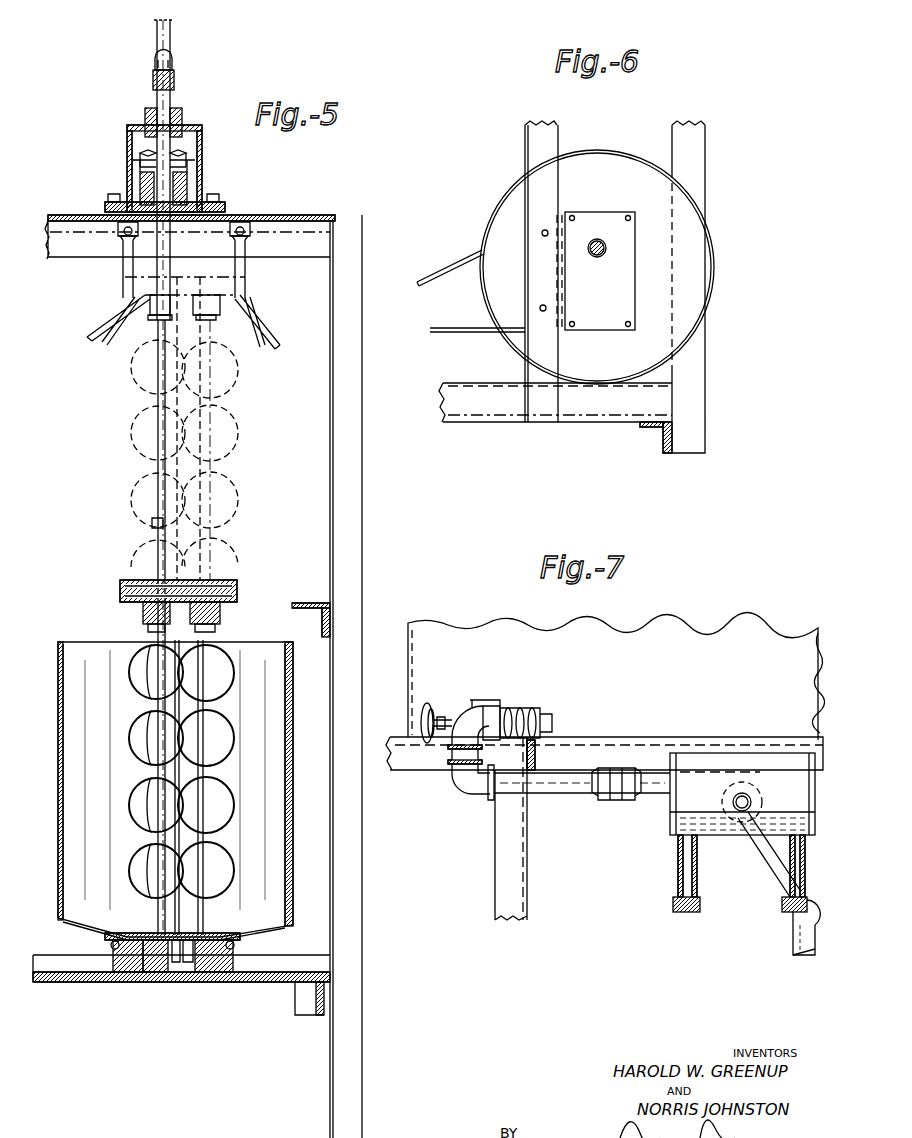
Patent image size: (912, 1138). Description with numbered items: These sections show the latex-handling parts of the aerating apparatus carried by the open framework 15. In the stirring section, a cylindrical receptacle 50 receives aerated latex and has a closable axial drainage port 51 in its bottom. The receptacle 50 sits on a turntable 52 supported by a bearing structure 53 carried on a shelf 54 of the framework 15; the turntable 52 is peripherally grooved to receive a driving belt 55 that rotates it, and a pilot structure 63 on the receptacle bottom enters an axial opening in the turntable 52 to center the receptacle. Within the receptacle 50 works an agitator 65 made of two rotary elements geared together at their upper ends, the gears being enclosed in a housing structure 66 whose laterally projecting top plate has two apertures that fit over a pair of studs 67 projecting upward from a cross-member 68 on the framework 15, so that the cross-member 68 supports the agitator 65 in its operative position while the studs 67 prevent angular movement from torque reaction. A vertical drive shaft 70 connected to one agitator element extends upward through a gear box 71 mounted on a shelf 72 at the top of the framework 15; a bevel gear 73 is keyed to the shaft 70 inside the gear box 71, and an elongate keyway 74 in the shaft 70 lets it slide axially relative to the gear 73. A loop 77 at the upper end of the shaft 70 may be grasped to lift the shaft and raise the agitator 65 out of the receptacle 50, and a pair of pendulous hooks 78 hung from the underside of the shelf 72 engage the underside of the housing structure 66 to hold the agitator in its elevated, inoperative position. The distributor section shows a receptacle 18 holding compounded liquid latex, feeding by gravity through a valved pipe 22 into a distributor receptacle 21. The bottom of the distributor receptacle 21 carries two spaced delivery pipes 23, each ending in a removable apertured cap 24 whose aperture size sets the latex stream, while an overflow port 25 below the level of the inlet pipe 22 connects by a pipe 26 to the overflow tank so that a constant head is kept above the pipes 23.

In FIG. 5, the open framework 15 is at (335, 548).
In FIG. 6, the open framework 15 is at (692, 405).
In FIG. 7, the open framework 15 is at (515, 893).
In FIG. 7, the receptacle 18 is at (714, 632).
In FIG. 7, the distributor receptacle 21 is at (670, 805).
In FIG. 7, the valved pipe 22 is at (497, 704).
In FIG. 7, the delivery pipe 23 is at (677, 860).
In FIG. 7, the apertured cap 24 is at (673, 908).
In FIG. 7, the overflow port 25 is at (752, 805).
In FIG. 7, the overflow pipe 26 is at (768, 856).
In FIG. 5, the receptacle 50 is at (252, 650).
In FIG. 6, the receptacle 50 is at (503, 343).
In FIG. 5, the drainage port 51 is at (170, 952).
In FIG. 5, the turntable 52 is at (118, 958).
In FIG. 5, the bearing structure 53 is at (210, 960).
In FIG. 5, the shelf 54 is at (262, 982).
In FIG. 5, the driving belt 55 is at (236, 947).
In FIG. 6, the driving belt 55 is at (440, 264).
In FIG. 5, the pilot structure 63 is at (190, 955).
In FIG. 5, the agitator 65 is at (240, 432).
In FIG. 5, the housing structure 66 is at (222, 286).
In FIG. 6, the housing structure 66 is at (612, 318).
In FIG. 6, the stud 67 is at (541, 233).
In FIG. 6, the cross-member 68 is at (545, 143).
In FIG. 5, the drive shaft 70 is at (158, 445).
In FIG. 6, the drive shaft 70 is at (600, 244).
In FIG. 5, the gear box 71 is at (203, 152).
In FIG. 5, the shelf 72 is at (297, 216).
In FIG. 5, the bevel gear 73 is at (175, 167).
In FIG. 5, the keyway 74 is at (151, 520).
In FIG. 6, the keyway 74 is at (596, 239).
In FIG. 5, the loop 77 is at (176, 62).
In FIG. 5, the pendulous hook 78 is at (102, 318).